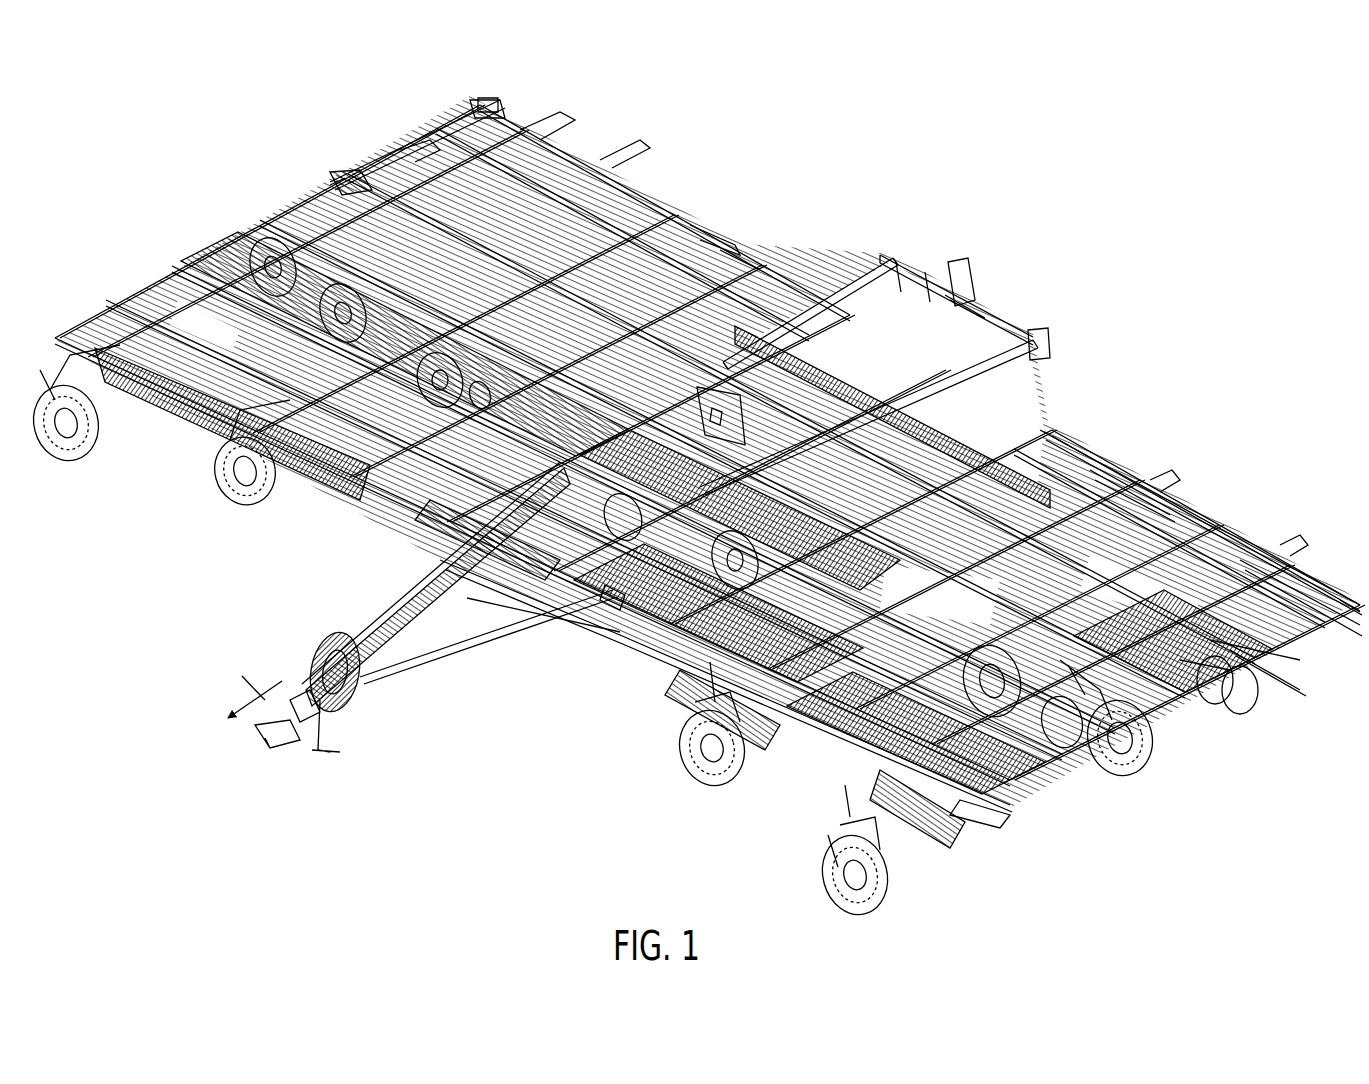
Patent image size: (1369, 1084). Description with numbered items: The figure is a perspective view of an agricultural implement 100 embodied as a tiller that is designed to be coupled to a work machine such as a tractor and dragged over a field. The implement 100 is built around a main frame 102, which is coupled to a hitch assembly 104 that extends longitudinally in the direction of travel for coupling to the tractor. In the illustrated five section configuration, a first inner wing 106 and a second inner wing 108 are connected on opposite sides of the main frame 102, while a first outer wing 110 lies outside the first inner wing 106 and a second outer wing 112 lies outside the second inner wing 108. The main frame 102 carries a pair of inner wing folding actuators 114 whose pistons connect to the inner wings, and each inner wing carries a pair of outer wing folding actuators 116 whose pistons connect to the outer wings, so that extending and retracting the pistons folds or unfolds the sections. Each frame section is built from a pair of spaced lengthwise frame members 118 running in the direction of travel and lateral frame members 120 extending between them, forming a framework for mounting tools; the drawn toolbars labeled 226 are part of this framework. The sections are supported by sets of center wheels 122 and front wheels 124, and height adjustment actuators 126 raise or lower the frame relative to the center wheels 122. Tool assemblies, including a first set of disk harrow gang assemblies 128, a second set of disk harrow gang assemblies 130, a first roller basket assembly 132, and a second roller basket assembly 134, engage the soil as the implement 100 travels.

The agricultural implement 100 is at (146, 158).
The main frame 102 is at (940, 246).
The hitch assembly 104 is at (408, 668).
The first inner wing 106 is at (766, 248).
The second inner wing 108 is at (1160, 492).
The first outer wing 110 is at (606, 142).
The second outer wing 112 is at (1268, 516).
The inner wing folding actuators 114 is at (790, 400).
The outer wing folding actuators 116 is at (288, 492).
The lengthwise frame members 118 is at (360, 487).
The lateral frame members 120 is at (682, 672).
The center wheels 122 is at (1005, 722).
The front wheels 124 is at (690, 776).
The height adjustment actuators 126 is at (1094, 688).
The first set of disk harrow gang assemblies 128 is at (968, 848).
The second set of disk harrow gang assemblies 130 is at (1248, 706).
The first roller basket assembly 132 is at (350, 166).
The second roller basket assembly 134 is at (487, 104).
The toolbar 226 is at (416, 152).